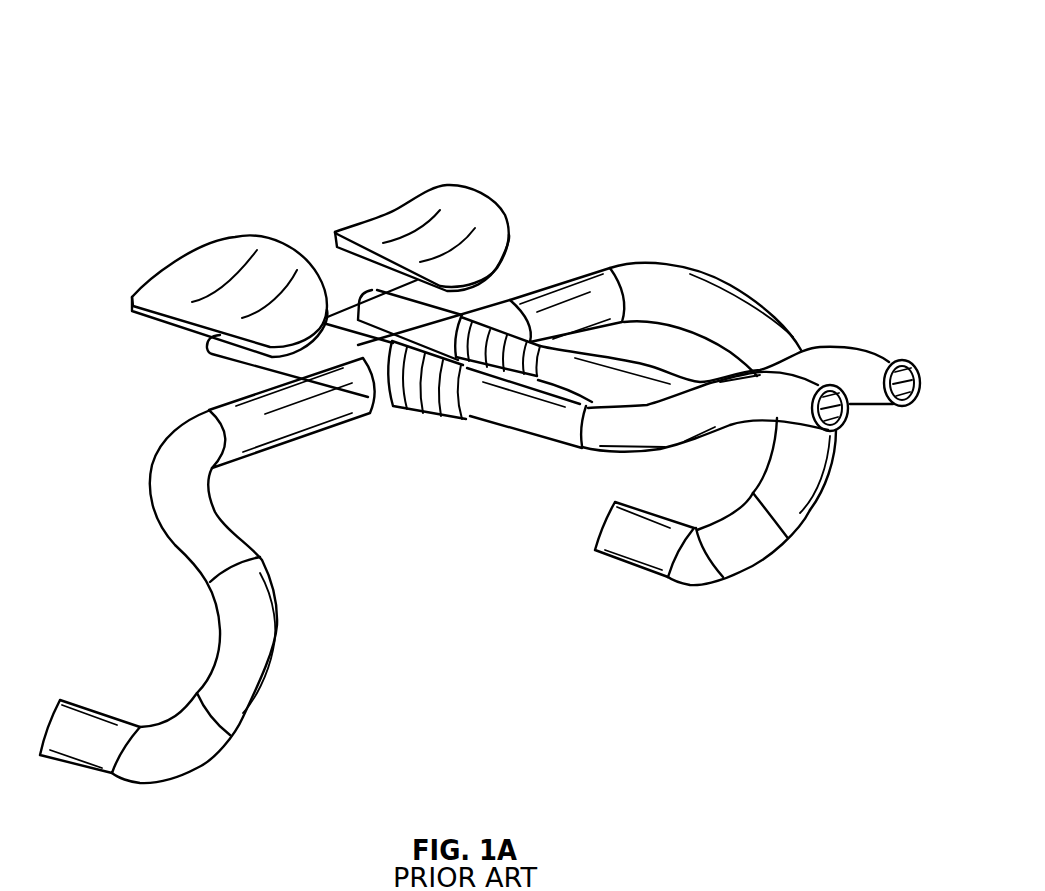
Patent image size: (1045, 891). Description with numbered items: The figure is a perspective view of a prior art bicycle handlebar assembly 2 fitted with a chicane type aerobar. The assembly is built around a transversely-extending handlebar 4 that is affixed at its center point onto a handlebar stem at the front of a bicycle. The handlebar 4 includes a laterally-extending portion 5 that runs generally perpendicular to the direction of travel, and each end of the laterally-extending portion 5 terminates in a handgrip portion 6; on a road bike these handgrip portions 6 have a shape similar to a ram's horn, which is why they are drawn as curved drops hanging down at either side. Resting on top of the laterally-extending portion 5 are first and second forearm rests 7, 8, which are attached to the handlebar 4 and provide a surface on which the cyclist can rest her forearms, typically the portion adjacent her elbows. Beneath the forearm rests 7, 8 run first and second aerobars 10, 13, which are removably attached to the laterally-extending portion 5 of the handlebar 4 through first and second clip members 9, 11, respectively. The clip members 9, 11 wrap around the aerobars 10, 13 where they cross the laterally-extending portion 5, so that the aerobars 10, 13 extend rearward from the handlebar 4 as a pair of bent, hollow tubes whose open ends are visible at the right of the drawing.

The handlebar assembly 2 is at (736, 72).
The handlebar 4 is at (730, 273).
The laterally-extending portion 5 is at (610, 266).
The handgrip portion 6 is at (760, 571).
The first forearm rest 7 is at (177, 252).
The second forearm rest 8 is at (378, 214).
The first clip member 9 is at (416, 388).
The first aerobar 10 is at (579, 450).
The second clip member 11 is at (499, 330).
The second aerobar 13 is at (874, 345).